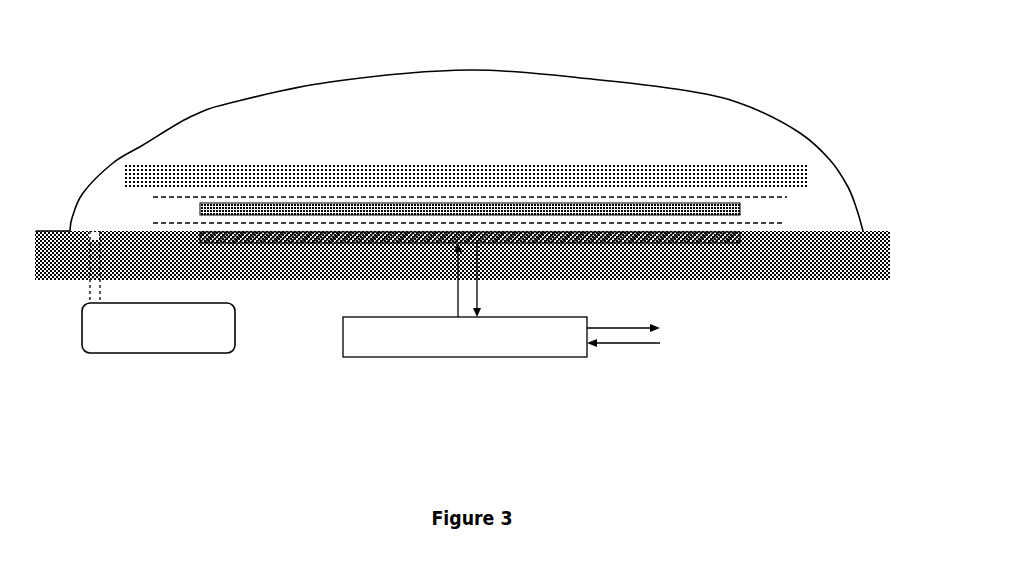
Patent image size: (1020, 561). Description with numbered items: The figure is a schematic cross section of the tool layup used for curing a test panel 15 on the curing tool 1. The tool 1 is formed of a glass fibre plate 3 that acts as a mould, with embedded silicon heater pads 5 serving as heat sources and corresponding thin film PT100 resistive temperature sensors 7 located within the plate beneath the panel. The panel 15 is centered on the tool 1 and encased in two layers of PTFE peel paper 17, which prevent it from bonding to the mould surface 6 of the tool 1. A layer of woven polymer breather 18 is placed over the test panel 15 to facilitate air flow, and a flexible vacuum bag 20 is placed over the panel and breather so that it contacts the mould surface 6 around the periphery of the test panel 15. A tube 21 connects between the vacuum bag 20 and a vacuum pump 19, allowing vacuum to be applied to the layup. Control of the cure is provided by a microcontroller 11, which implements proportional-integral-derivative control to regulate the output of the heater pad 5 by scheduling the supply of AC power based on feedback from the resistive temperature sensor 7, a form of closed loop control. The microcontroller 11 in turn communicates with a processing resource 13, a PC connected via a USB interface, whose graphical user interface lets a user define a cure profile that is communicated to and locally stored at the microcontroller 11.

The curing tool 1 is at (708, 73).
The vacuum bag 20 is at (187, 118).
The mould surface 6 is at (52, 231).
The woven polymer breather 18 is at (308, 163).
The PTFE peel paper 17 is at (520, 223).
The test panel 15 is at (627, 203).
The heater pad 5 is at (630, 243).
The resistive temperature sensor 7 is at (470, 274).
The glass fibre plate 3 is at (268, 268).
The microcontroller 11 is at (452, 348).
The processing resource 13 is at (689, 336).
The vacuum pump 19 is at (145, 341).
The tube 21 is at (88, 290).